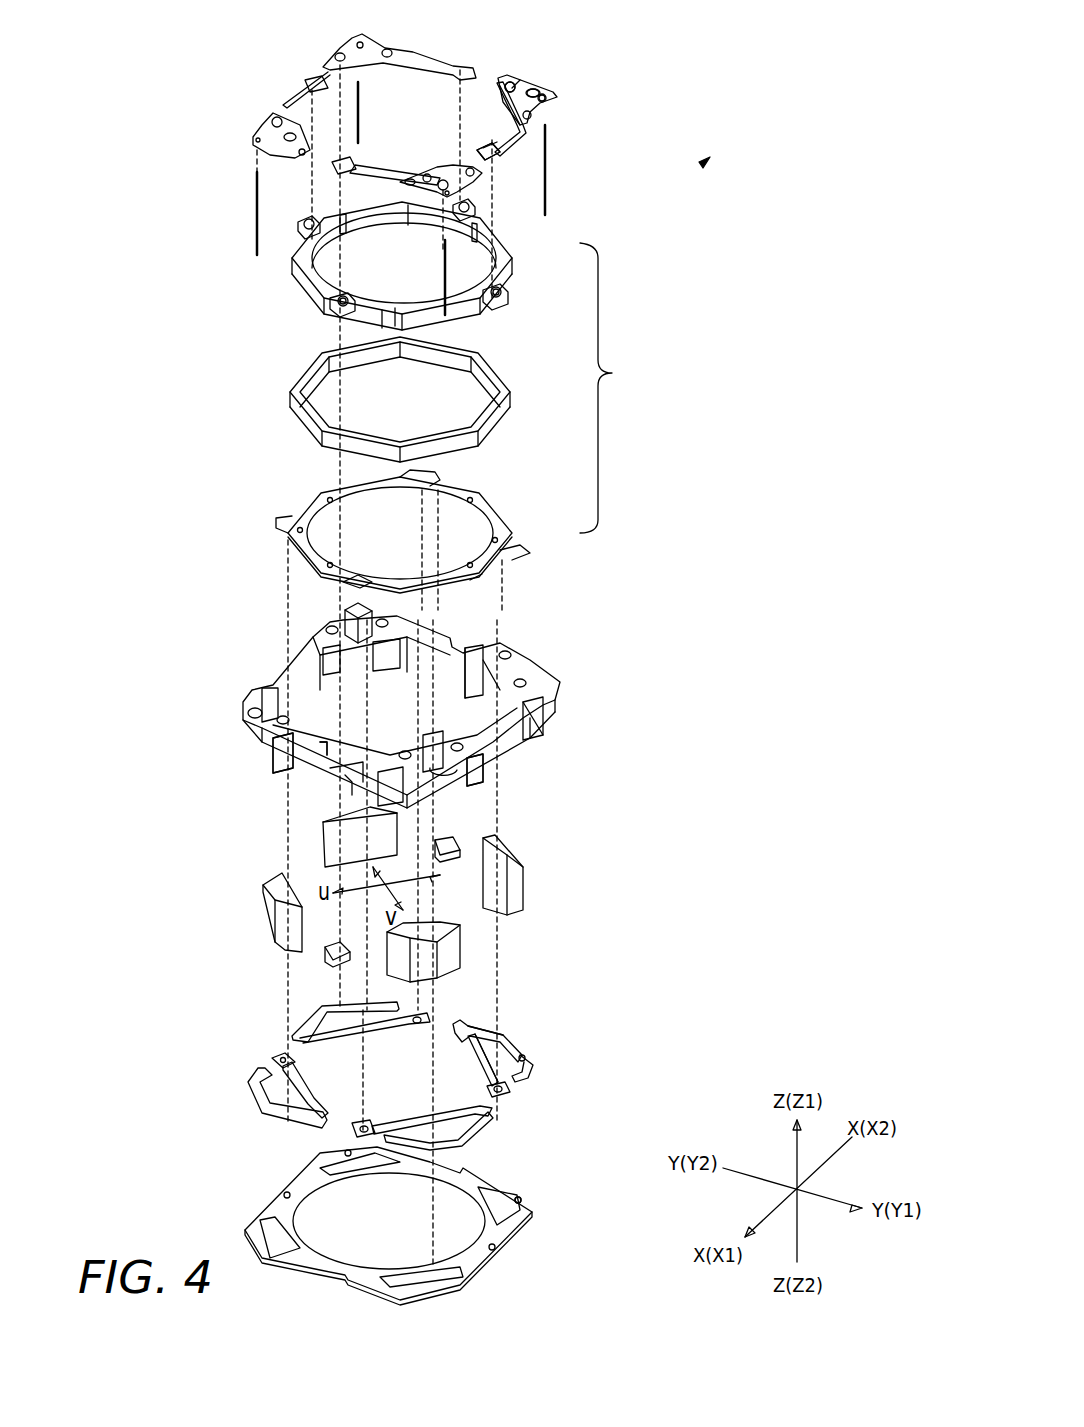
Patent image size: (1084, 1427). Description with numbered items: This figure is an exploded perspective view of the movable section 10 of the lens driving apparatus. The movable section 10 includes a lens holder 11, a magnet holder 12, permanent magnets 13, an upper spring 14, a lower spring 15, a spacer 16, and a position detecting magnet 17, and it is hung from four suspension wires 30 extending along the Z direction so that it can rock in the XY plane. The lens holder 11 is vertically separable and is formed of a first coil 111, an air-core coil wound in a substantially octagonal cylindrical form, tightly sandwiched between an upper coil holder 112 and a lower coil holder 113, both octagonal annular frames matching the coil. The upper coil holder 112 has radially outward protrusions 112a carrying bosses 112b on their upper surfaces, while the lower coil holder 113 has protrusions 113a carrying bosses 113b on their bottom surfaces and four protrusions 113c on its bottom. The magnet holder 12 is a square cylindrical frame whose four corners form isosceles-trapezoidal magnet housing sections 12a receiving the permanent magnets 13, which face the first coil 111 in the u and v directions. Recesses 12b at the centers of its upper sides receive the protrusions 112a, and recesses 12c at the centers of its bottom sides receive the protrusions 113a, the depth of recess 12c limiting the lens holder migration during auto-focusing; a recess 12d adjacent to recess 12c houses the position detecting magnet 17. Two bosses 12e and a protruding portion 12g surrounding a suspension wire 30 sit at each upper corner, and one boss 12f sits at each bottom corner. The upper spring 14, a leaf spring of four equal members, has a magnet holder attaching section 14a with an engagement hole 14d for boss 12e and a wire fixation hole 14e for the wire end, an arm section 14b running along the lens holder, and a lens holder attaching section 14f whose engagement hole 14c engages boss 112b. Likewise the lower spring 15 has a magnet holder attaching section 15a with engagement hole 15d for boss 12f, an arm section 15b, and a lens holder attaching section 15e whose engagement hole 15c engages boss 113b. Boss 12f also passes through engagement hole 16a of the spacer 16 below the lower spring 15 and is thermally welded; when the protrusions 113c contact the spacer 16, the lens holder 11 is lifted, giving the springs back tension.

The movable section 10 is at (705, 164).
The lens holder 11 is at (613, 388).
The first coil 111 is at (512, 404).
The upper coil holder 112 is at (512, 262).
The protrusion 112a is at (508, 300).
The boss 112b is at (490, 305).
The lower coil holder 113 is at (500, 522).
The protrusion 113a is at (520, 555).
The boss 113b is at (485, 580).
The protrusion 113c is at (355, 585).
The magnet holder 12 is at (550, 684).
The magnet housing section 12a is at (470, 655).
The recess 12b is at (275, 758).
The recess 12c is at (348, 790).
The recess 12d is at (325, 785).
The boss 12e is at (512, 650).
The boss 12f is at (482, 790).
The protruding portion 12g is at (250, 716).
The permanent magnet 13 is at (330, 848).
The upper spring 14 is at (540, 108).
The magnet holder attaching section 14a is at (532, 80).
The arm section 14b is at (497, 105).
The engagement hole 14c is at (485, 147).
The engagement hole 14d is at (508, 82).
The wire fixation hole 14e is at (544, 92).
The lens holder attaching section 14f is at (503, 153).
The lower spring 15 is at (530, 1070).
The magnet holder attaching section 15a is at (502, 1040).
The arm section 15b is at (470, 1052).
The engagement hole 15c is at (508, 1090).
The engagement hole 15d is at (528, 1057).
The lens holder attaching section 15e is at (500, 1094).
The spacer 16 is at (518, 1224).
The engagement hole 16a is at (520, 1198).
The position detecting magnet 17 is at (455, 840).
The suspension wire 30 is at (360, 100).